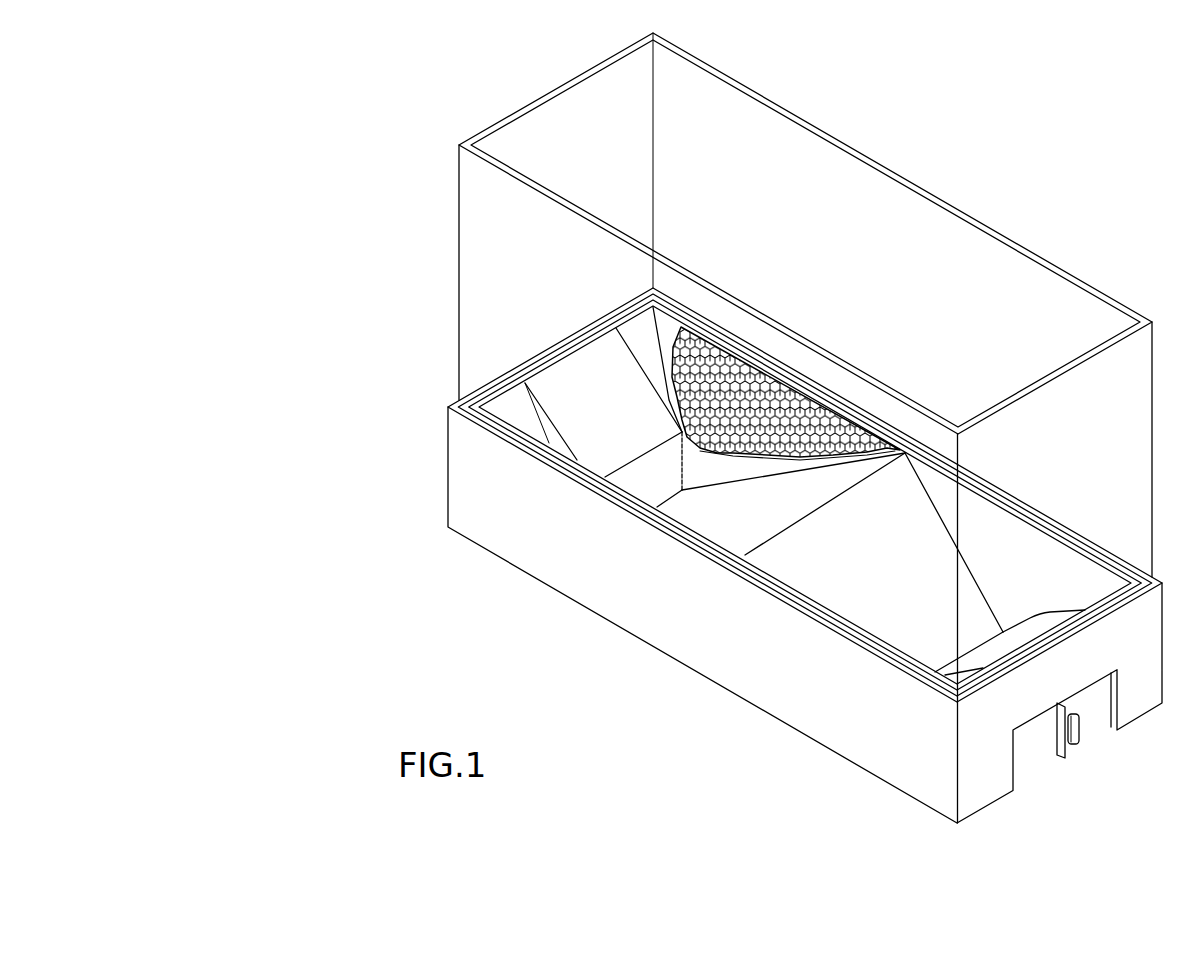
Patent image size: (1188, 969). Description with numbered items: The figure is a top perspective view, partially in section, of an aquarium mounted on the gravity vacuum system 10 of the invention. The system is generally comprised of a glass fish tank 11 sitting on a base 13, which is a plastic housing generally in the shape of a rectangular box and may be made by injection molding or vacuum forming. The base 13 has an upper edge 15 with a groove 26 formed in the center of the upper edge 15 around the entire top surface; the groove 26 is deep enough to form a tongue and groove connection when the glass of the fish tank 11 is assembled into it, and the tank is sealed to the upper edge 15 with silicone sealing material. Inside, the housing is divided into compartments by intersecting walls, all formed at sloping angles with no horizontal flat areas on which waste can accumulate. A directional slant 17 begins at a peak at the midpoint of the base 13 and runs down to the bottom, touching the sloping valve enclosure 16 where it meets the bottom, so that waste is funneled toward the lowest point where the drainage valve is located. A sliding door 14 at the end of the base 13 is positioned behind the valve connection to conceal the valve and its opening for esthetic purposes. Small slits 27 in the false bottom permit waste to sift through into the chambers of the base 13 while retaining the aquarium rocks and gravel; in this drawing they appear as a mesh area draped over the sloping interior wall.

The gravity vacuum system 10 is at (390, 273).
The fish tank 11 is at (473, 208).
The base 13 is at (482, 508).
The sliding door 14 is at (1093, 718).
The upper edge 15 is at (885, 665).
The sloping valve enclosure 16 is at (600, 436).
The directional slant 17 is at (843, 547).
The groove 26 is at (477, 397).
The slits 27 is at (753, 403).